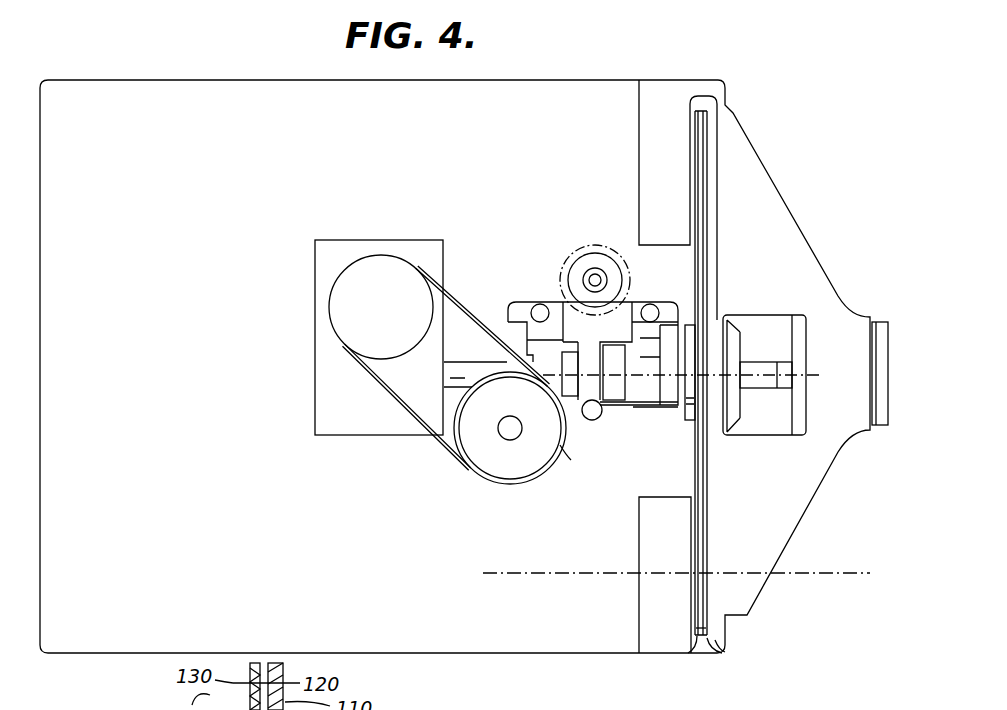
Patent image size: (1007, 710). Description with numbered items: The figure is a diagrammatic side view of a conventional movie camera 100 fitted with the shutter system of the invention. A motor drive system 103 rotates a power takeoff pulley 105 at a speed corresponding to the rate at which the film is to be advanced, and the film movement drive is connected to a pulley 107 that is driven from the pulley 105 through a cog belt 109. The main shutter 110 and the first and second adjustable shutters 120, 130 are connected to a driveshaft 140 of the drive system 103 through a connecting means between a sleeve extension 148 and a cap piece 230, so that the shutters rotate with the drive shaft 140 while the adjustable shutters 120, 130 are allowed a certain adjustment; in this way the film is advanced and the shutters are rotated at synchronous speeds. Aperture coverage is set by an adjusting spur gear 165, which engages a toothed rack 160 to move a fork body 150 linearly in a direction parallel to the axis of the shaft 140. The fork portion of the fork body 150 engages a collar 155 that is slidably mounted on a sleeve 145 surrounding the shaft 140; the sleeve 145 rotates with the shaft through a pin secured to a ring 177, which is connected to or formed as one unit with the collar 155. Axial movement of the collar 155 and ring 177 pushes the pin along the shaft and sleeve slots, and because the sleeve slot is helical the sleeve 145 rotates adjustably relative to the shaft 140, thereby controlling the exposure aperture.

The movie camera 100 is at (652, 63).
The motor drive system 103 is at (358, 226).
The pulley 105 is at (378, 285).
The pulley 107 is at (513, 457).
The cog belt 109 is at (413, 416).
The main shutter 110 is at (708, 514).
The first adjustable shutter 120 is at (722, 652).
The second adjustable shutter 130 is at (700, 652).
The driveshaft 140 is at (463, 352).
The sleeve 145 is at (545, 365).
The sleeve extension 148 is at (690, 330).
The fork body 150 is at (592, 420).
The collar 155 is at (572, 452).
The toothed rack 160 is at (618, 290).
The adjusting spur gear 165 is at (576, 268).
The ring 177 is at (610, 398).
The cap piece 230 is at (712, 335).